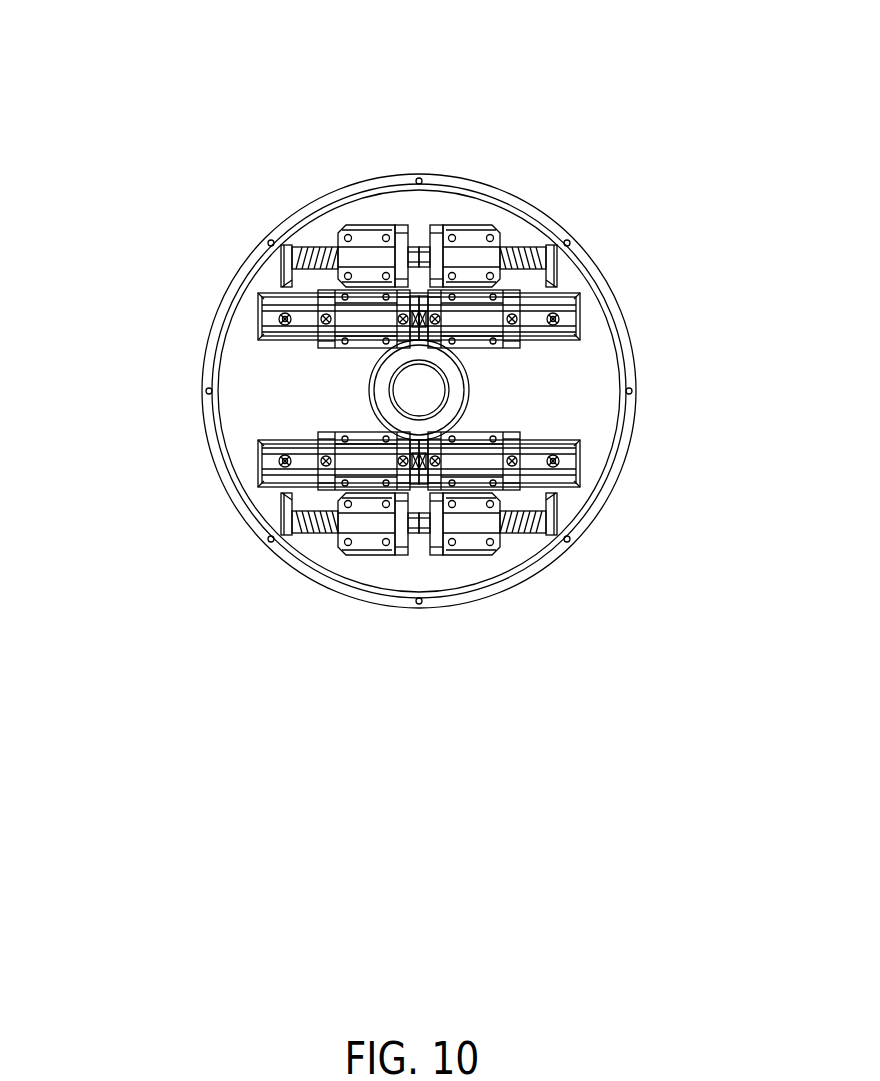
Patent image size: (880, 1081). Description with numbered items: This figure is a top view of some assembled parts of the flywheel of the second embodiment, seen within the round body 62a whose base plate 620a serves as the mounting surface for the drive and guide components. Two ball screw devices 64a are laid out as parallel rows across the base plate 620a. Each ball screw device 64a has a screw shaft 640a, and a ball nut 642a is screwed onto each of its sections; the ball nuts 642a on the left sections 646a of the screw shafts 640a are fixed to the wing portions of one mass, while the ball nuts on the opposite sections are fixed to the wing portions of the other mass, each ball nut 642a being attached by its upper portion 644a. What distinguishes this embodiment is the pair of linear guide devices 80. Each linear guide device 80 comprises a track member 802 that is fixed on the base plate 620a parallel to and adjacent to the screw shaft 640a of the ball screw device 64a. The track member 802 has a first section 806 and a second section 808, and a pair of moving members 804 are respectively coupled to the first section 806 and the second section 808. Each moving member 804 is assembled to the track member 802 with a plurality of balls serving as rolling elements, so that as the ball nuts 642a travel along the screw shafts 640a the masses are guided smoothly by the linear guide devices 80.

The body 62a is at (222, 290).
The base plate 620a is at (253, 355).
The ball screw device 64a is at (403, 364).
The screw shaft 640a is at (313, 236).
The ball nut 642a is at (363, 222).
The upper portion 644a is at (502, 410).
The left section 646a is at (306, 247).
The linear guide device 80 is at (417, 434).
The track member 802 is at (567, 305).
The moving member 804 is at (483, 313).
The first section 806 is at (305, 318).
The second section 808 is at (530, 330).